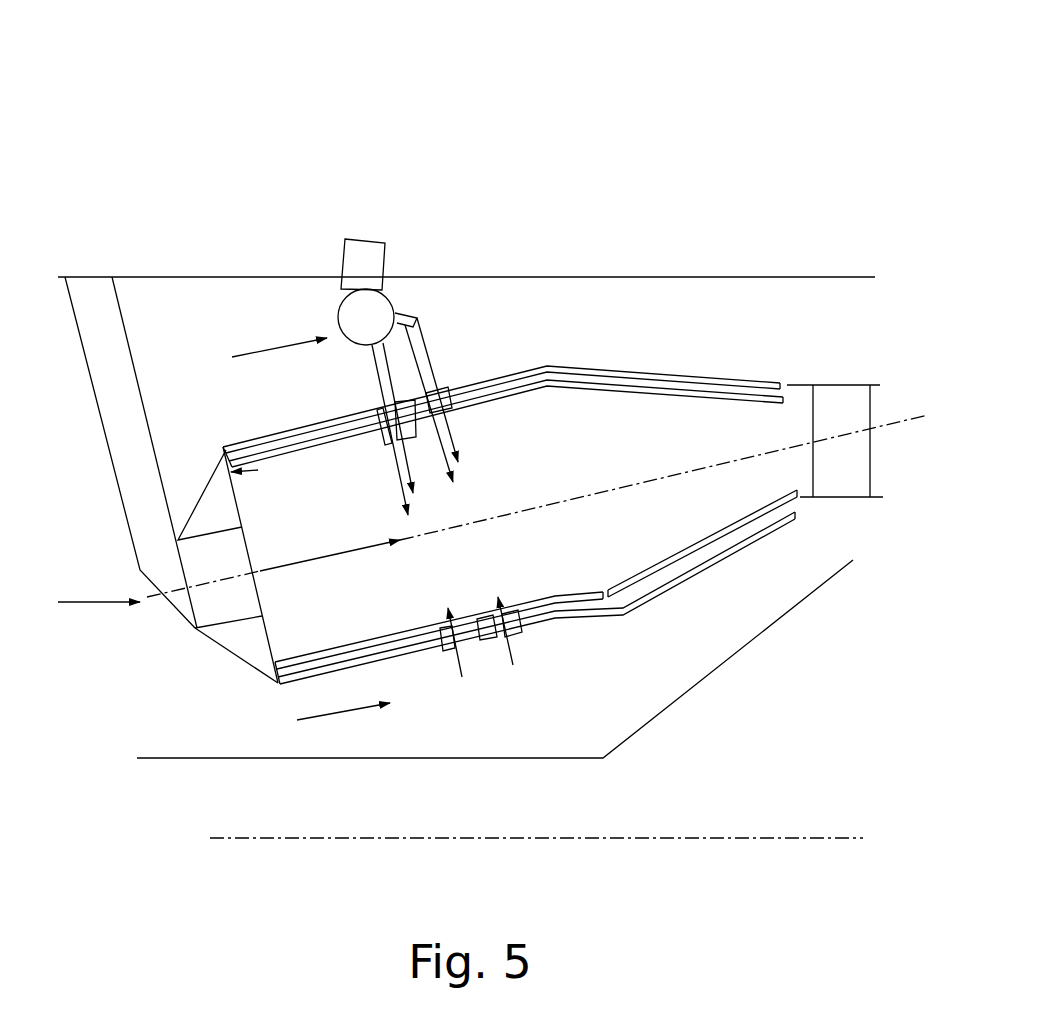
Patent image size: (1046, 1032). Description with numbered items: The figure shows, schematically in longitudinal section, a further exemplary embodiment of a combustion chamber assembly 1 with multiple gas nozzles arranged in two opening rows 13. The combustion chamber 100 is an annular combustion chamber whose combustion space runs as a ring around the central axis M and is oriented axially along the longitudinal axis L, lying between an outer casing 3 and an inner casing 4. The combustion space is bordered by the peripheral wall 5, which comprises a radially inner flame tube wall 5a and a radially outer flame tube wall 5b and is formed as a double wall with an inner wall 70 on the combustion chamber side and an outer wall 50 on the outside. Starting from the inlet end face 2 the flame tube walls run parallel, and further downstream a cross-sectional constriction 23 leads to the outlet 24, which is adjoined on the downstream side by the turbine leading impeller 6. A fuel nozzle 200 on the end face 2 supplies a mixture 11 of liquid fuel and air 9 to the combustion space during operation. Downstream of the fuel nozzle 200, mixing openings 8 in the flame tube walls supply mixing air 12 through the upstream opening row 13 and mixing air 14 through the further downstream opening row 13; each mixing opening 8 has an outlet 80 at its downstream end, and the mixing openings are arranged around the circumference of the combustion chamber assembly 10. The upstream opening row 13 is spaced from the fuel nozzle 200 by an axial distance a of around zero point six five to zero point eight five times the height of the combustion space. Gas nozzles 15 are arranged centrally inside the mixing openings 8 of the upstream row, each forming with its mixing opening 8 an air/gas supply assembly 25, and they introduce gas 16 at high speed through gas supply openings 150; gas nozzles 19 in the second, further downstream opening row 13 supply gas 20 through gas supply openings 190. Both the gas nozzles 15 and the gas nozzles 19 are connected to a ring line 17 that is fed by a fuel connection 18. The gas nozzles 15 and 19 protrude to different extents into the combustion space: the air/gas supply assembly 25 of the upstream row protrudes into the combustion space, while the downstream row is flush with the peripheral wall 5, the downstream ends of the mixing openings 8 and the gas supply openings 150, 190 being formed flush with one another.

The combustion chamber assembly 1 is at (425, 136).
The end face 2 is at (267, 644).
The fuel nozzle 200 is at (223, 597).
The outer casing 3 is at (600, 277).
The inner casing 4 is at (342, 760).
The peripheral wall 5 is at (643, 372).
The radially inner flame tube wall 5a is at (680, 580).
The radially outer flame tube wall 5b is at (693, 362).
The turbine leading impeller 6 is at (857, 463).
The mixing opening 8 is at (377, 412).
The air 9 is at (108, 603).
The combustion chamber assembly 10 is at (311, 531).
The mixture of liquid fuel and air 11 is at (330, 566).
The mixing air 12 is at (415, 511).
The opening row 13 is at (458, 370).
The mixing air 14 is at (470, 491).
The gas nozzle 15 is at (336, 326).
The gas 16 is at (412, 418).
The ring line 17 is at (346, 313).
The fuel connection 18 is at (362, 253).
The gas nozzle 19 is at (445, 377).
The gas 20 is at (438, 421).
The cross-sectional constriction 23 is at (760, 358).
The outlet 24 is at (795, 427).
The air/gas supply assembly 25 is at (497, 377).
The outer wall 50 is at (240, 445).
The inner wall 70 is at (597, 362).
The outlet 80 is at (388, 440).
The combustion chamber 100 is at (820, 385).
The gas supply opening 150 is at (392, 440).
The gas supply opening 190 is at (457, 430).
The longitudinal axis L is at (892, 423).
The central axis M is at (790, 838).
The axial distance a is at (255, 473).